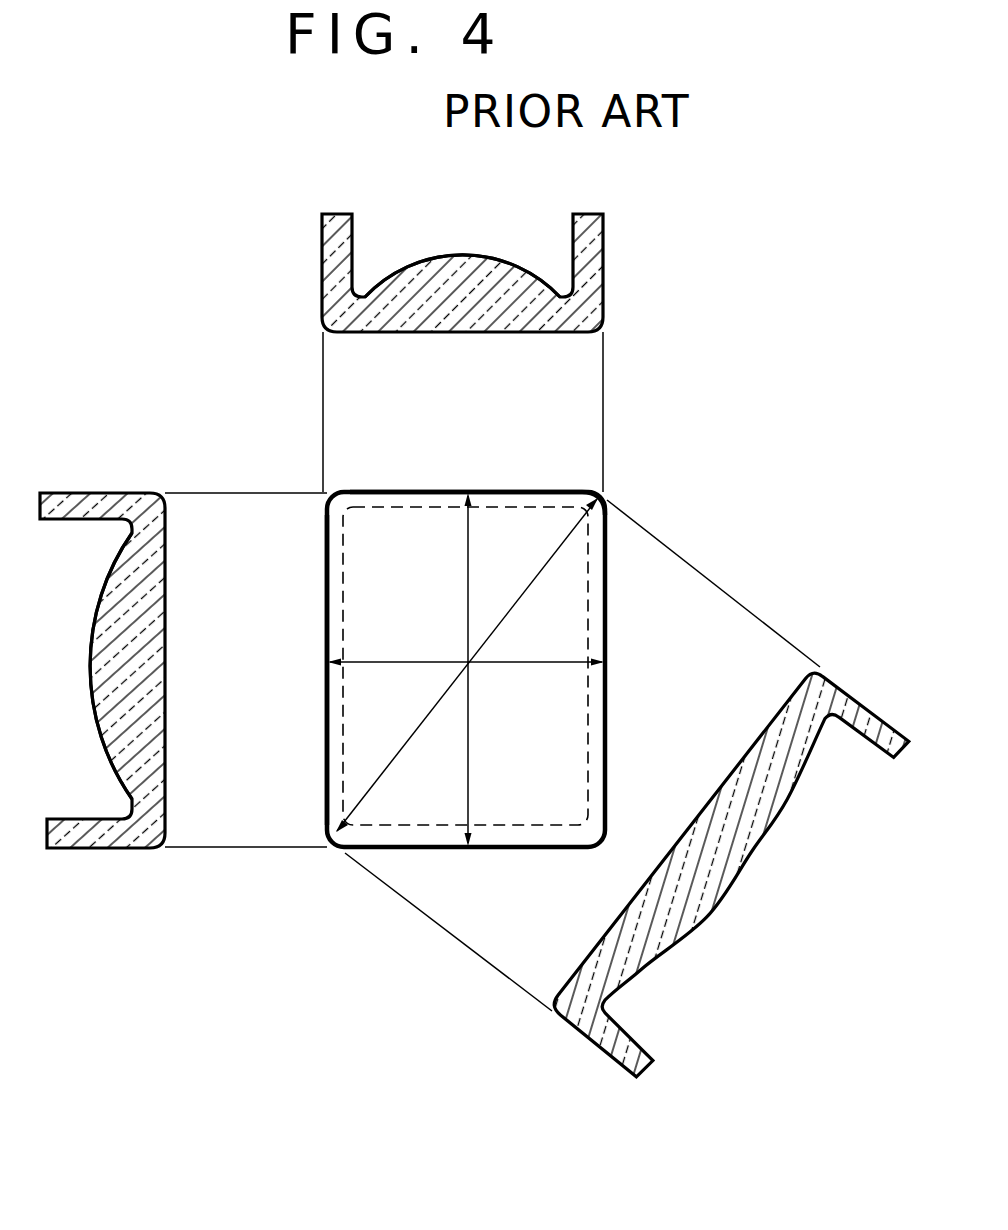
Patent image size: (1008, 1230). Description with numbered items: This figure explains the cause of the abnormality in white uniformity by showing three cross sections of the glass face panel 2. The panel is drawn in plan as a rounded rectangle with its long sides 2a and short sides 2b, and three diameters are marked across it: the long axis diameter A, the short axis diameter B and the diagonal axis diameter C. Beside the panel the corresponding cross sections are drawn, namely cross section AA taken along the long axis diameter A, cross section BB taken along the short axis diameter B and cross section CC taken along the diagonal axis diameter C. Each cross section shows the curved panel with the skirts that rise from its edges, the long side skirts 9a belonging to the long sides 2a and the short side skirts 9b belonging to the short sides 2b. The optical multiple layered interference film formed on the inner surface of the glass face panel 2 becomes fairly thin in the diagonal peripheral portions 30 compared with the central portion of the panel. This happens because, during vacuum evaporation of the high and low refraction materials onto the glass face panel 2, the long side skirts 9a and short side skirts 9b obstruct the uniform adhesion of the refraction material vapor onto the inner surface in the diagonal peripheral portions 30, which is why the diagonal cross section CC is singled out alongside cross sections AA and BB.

The long side skirt 9a is at (330, 266).
The short side skirt 9b is at (100, 494).
The glass face panel 2 is at (568, 617).
The long side 2a is at (325, 576).
The short side 2b is at (349, 492).
The diagonal peripheral portion 30 is at (596, 494).
The long axis diameter A is at (466, 573).
The short axis diameter B is at (536, 664).
The diagonal axis diameter C is at (413, 733).
The cross section along long axis diameter AA is at (150, 655).
The cross section along short axis diameter BB is at (458, 331).
The cross section along diagonal axis diameter CC is at (748, 850).